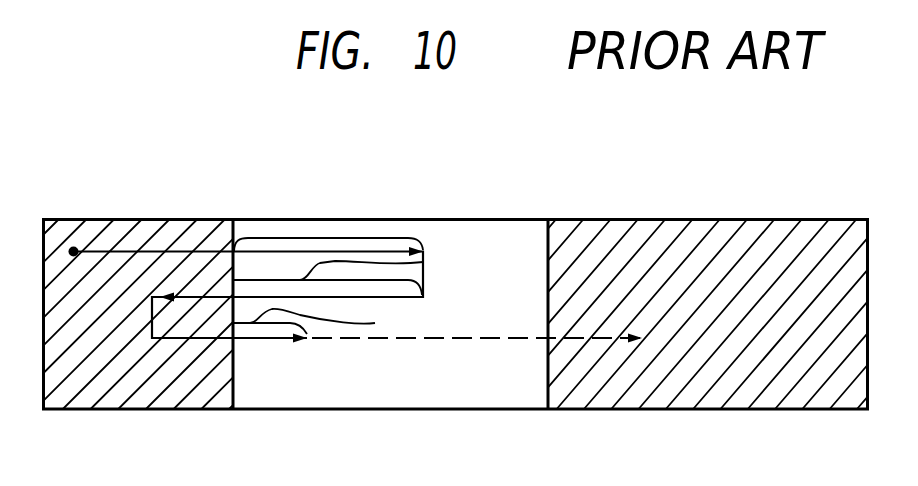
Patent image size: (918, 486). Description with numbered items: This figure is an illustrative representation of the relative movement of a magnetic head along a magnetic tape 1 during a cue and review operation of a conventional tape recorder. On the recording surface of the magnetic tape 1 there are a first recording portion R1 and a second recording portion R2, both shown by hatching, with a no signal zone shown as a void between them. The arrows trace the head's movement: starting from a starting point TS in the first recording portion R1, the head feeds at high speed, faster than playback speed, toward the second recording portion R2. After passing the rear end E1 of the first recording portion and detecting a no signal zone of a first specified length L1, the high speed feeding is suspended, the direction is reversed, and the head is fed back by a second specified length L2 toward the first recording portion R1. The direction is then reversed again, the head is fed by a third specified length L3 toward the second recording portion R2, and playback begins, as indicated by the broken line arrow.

The magnetic tape 1 is at (698, 228).
The starting point TS is at (76, 250).
The first specified length L1 is at (318, 238).
The second specified length L2 is at (423, 262).
The third specified length L3 is at (375, 323).
The first recording portion R1 is at (160, 400).
The rear end of the first recording portion E1 is at (236, 388).
The second recording portion R2 is at (673, 402).